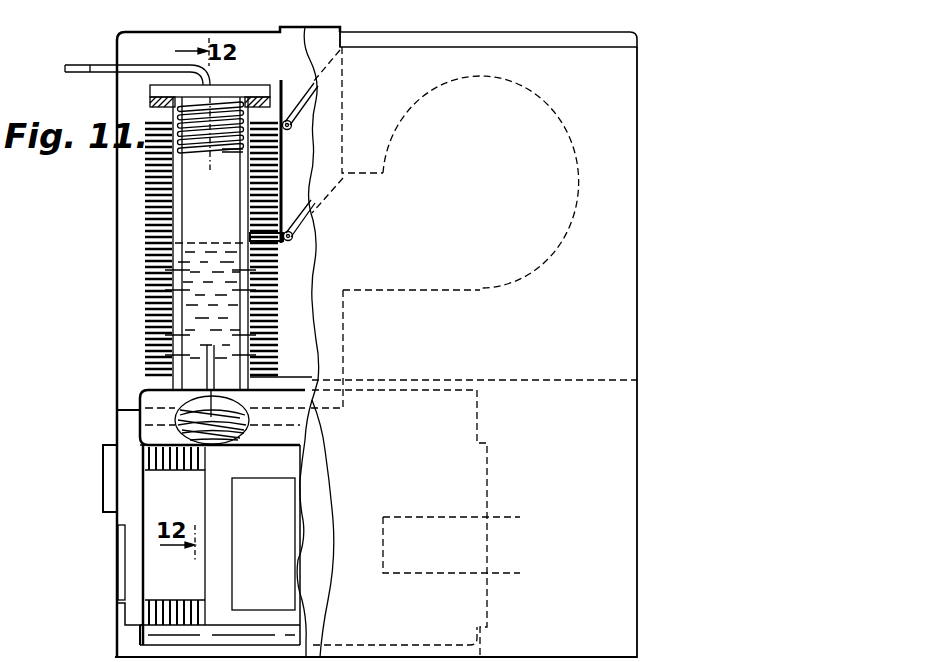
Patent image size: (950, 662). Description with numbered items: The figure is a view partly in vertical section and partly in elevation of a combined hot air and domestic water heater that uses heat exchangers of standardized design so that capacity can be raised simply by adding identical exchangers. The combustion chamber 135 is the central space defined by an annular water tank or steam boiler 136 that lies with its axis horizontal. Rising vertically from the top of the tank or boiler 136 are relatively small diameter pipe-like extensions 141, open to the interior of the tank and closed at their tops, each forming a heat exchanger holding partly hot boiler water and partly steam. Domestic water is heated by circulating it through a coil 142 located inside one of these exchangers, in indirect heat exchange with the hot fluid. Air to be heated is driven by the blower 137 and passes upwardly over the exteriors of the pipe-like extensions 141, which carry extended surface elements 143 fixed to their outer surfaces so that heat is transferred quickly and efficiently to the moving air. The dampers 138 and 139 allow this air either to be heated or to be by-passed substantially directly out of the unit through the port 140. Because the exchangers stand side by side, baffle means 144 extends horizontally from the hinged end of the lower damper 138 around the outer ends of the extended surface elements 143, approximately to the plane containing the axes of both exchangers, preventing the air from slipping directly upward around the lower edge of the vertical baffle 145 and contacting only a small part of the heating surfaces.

The combustion chamber 135 is at (272, 476).
The annular water tank or steam boiler 136 is at (147, 388).
The blower 137 is at (514, 273).
The lower damper 138 is at (303, 226).
The upper damper 139 is at (313, 94).
The port 140 is at (293, 28).
The pipe-like extensions 141 is at (222, 226).
The coil 142 is at (193, 142).
The extended surface elements 143 is at (148, 233).
The baffle means 144 is at (283, 242).
The vertical baffle 145 is at (283, 164).